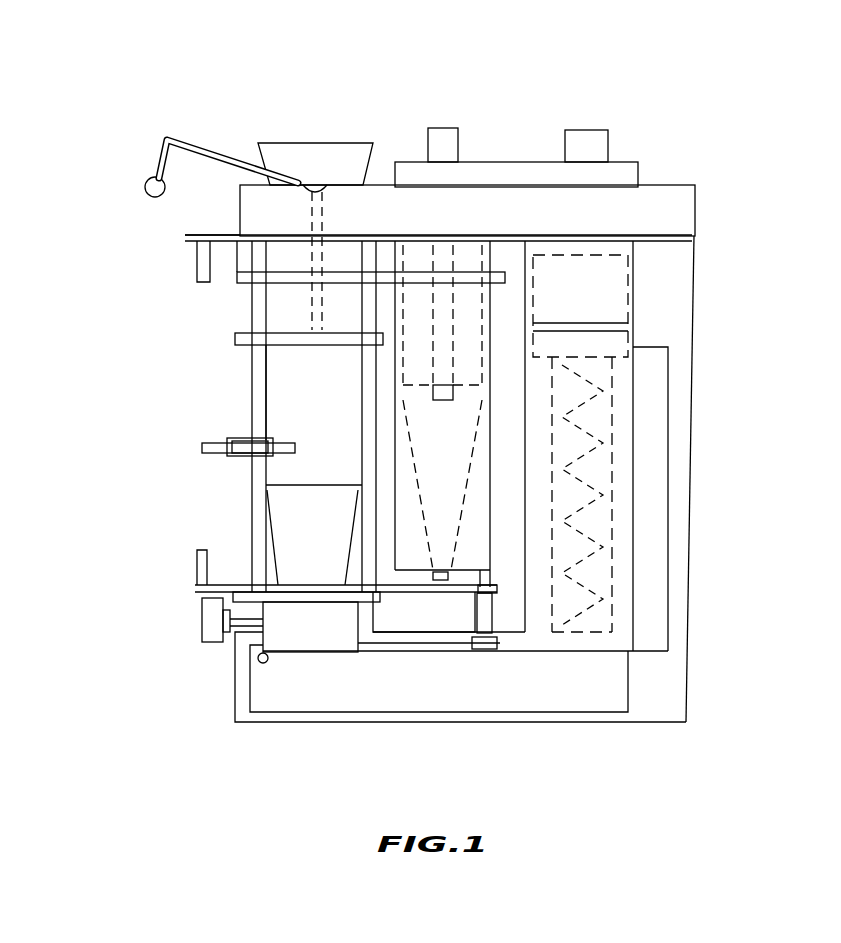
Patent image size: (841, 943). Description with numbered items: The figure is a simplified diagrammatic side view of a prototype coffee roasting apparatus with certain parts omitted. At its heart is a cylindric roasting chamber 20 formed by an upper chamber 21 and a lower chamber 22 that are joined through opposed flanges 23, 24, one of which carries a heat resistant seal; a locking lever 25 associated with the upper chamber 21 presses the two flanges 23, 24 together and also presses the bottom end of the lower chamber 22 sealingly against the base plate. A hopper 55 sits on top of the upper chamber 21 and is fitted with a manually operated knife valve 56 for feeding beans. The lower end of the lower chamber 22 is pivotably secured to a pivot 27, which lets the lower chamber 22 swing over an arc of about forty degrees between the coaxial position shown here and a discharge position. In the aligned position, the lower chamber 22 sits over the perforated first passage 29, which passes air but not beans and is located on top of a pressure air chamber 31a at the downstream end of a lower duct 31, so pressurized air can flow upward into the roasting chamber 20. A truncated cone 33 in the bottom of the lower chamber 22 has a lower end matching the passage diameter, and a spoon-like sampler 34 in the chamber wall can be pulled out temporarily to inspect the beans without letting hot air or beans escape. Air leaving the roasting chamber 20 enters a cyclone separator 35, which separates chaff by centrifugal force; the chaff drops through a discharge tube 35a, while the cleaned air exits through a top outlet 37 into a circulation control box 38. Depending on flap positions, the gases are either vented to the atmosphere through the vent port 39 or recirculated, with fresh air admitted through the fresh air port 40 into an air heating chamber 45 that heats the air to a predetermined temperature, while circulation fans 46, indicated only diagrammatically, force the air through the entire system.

The roasting chamber 20 is at (194, 423).
The upper chamber 21 is at (290, 302).
The lower chamber 22 is at (334, 431).
The flange 23 is at (290, 332).
The flange 24 is at (300, 347).
The locking lever 25 is at (202, 150).
The pivot 27 is at (492, 612).
The first passage 29 is at (290, 604).
The lower duct 31 is at (445, 643).
The pressure air chamber 31a is at (298, 645).
The truncated cone 33 is at (275, 560).
The sampler 34 is at (215, 447).
The cyclone separator 35 is at (467, 338).
The discharge tube 35a is at (433, 400).
The top outlet 37 is at (455, 258).
The circulation control box 38 is at (486, 168).
The vent port 39 is at (440, 128).
The fresh air port 40 is at (605, 142).
The air heating chamber 45 is at (633, 490).
The circulation fans 46 is at (633, 298).
The hopper 55 is at (325, 142).
The knife valve 56 is at (229, 232).